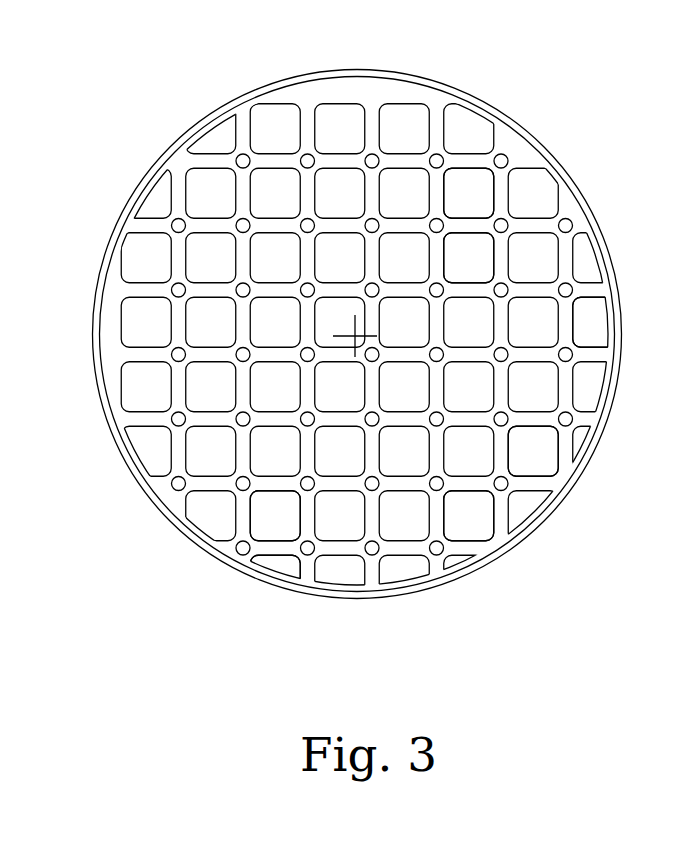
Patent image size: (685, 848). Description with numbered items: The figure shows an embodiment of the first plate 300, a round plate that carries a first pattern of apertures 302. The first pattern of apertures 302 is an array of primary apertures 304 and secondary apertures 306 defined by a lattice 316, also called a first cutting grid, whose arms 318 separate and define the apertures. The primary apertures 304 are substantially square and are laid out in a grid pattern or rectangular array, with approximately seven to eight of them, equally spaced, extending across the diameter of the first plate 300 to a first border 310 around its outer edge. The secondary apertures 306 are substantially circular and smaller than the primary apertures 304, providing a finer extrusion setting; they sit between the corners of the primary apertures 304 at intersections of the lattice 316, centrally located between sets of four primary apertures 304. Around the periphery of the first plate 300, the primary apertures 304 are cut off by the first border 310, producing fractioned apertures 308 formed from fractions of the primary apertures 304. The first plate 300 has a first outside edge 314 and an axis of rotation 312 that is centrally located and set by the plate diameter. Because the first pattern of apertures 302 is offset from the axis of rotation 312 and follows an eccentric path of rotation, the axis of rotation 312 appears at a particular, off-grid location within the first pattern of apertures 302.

The first plate 300 is at (200, 548).
The first pattern of apertures 302 is at (437, 553).
The primary apertures 304 is at (545, 470).
The secondary apertures 306 is at (568, 421).
The fractioned apertures 308 is at (585, 308).
The first border 310 is at (377, 97).
The axis of rotation 312 is at (355, 336).
The first outside edge 314 is at (313, 73).
The lattice 316 is at (290, 548).
The arms 318 is at (468, 225).